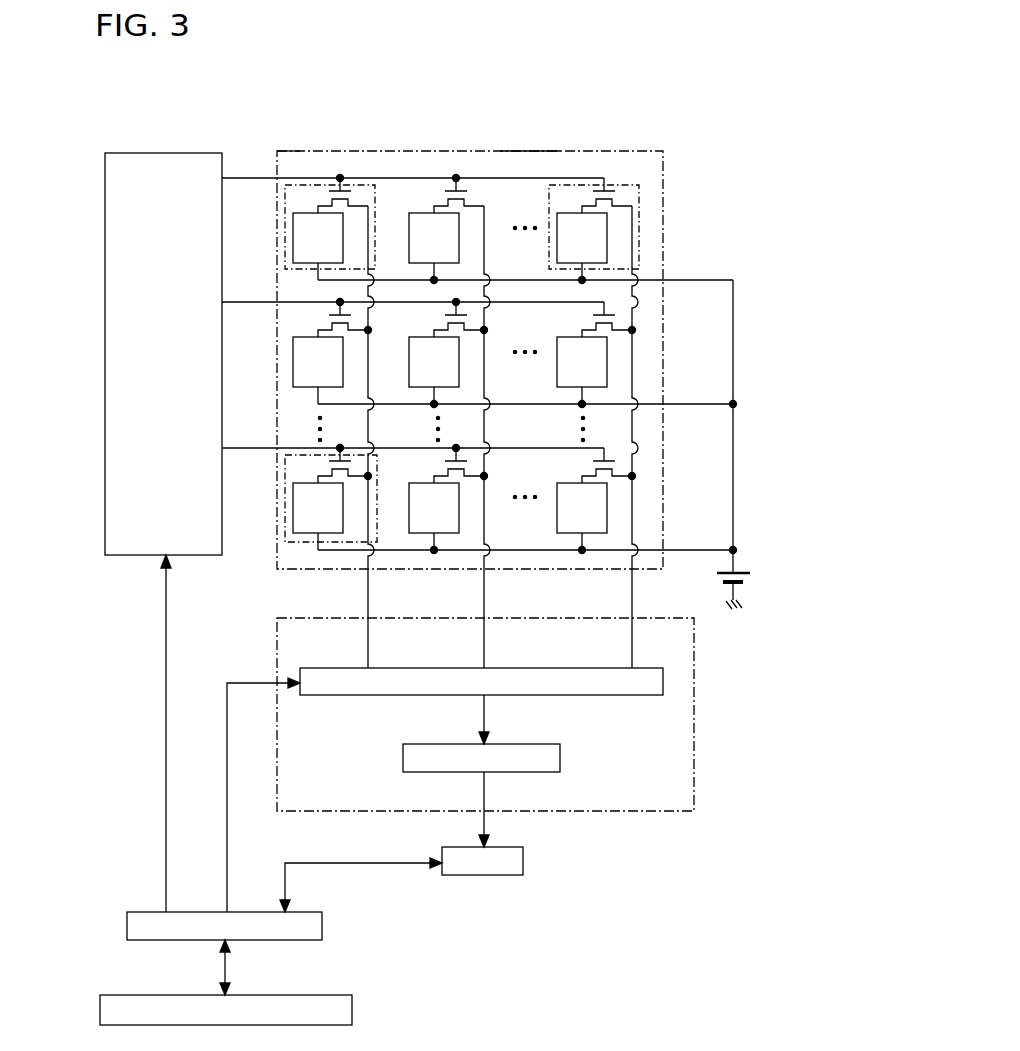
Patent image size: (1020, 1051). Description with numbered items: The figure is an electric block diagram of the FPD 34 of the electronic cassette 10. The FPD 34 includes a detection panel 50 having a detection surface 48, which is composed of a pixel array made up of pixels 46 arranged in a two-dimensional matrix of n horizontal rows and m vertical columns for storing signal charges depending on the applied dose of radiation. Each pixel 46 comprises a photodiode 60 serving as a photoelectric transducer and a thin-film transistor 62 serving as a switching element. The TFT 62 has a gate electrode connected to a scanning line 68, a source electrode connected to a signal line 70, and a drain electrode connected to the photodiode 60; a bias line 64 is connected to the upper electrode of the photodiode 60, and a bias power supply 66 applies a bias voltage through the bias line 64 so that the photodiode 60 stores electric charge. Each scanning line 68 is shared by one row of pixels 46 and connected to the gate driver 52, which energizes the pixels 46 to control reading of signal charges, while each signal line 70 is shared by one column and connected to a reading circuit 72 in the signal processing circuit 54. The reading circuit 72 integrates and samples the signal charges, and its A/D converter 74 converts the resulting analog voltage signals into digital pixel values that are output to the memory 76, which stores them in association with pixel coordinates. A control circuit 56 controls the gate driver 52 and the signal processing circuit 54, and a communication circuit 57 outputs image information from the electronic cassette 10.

The electronic cassette 10 is at (394, 73).
The FPD 34 is at (290, 121).
The pixel 46 is at (368, 185).
The detection surface 48 is at (594, 150).
The detection panel 50 is at (535, 145).
The gate driver 52 is at (148, 152).
The signal processing circuit 54 is at (695, 700).
The control circuit 56 is at (323, 922).
The communication circuit 57 is at (353, 1008).
The photodiode 60 is at (305, 243).
The thin-film transistor 62 is at (323, 198).
The bias line 64 is at (696, 278).
The bias power supply 66 is at (752, 580).
The scanning line 68 is at (243, 177).
The signal line 70 is at (366, 597).
The reading circuit 72 is at (578, 696).
The A/D converter 74 is at (561, 757).
The memory 76 is at (525, 858).